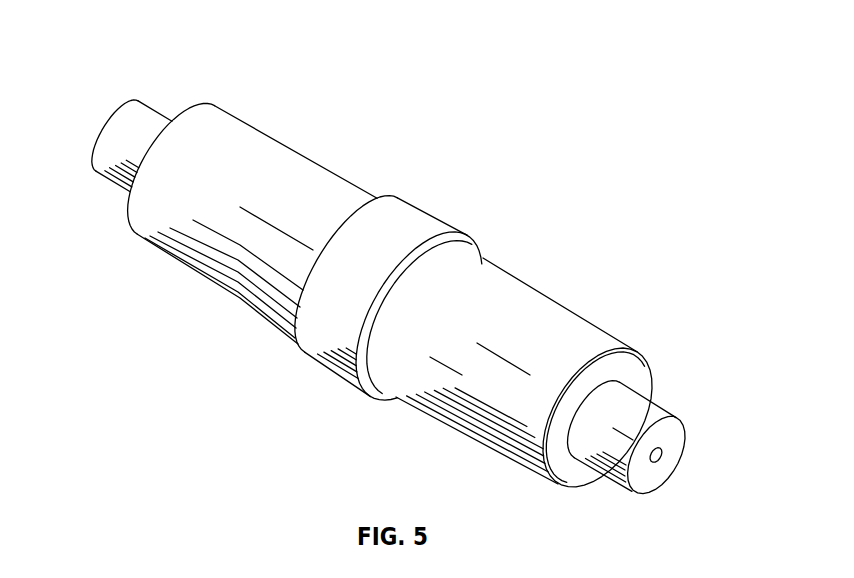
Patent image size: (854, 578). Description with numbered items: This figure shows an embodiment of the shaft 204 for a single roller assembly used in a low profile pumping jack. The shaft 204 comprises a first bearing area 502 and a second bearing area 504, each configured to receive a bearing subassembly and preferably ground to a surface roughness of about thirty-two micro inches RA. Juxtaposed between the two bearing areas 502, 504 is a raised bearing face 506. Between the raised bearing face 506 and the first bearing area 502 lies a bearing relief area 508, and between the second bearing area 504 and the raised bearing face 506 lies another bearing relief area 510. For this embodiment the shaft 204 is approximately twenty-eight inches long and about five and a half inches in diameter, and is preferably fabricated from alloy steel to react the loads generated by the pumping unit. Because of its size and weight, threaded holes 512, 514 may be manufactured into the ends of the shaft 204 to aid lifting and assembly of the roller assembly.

The shaft 204 is at (230, 60).
The first bearing area 502 is at (551, 318).
The second bearing area 504 is at (280, 162).
The raised bearing face 506 is at (322, 333).
The bearing relief area 508 is at (463, 246).
The bearing relief area 510 is at (377, 199).
The threaded hole 512 is at (665, 458).
The threaded hole 514 is at (117, 112).